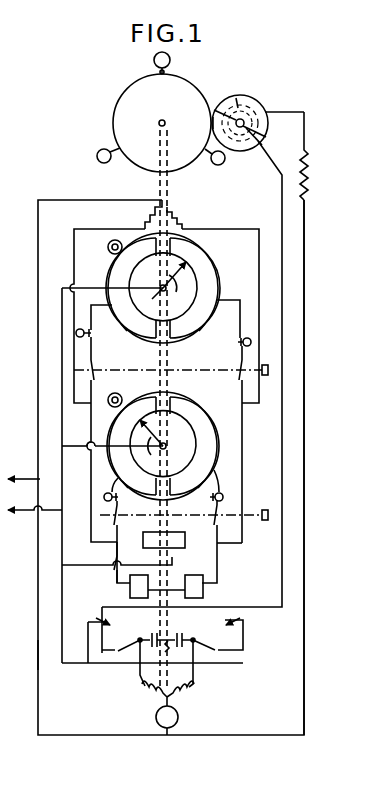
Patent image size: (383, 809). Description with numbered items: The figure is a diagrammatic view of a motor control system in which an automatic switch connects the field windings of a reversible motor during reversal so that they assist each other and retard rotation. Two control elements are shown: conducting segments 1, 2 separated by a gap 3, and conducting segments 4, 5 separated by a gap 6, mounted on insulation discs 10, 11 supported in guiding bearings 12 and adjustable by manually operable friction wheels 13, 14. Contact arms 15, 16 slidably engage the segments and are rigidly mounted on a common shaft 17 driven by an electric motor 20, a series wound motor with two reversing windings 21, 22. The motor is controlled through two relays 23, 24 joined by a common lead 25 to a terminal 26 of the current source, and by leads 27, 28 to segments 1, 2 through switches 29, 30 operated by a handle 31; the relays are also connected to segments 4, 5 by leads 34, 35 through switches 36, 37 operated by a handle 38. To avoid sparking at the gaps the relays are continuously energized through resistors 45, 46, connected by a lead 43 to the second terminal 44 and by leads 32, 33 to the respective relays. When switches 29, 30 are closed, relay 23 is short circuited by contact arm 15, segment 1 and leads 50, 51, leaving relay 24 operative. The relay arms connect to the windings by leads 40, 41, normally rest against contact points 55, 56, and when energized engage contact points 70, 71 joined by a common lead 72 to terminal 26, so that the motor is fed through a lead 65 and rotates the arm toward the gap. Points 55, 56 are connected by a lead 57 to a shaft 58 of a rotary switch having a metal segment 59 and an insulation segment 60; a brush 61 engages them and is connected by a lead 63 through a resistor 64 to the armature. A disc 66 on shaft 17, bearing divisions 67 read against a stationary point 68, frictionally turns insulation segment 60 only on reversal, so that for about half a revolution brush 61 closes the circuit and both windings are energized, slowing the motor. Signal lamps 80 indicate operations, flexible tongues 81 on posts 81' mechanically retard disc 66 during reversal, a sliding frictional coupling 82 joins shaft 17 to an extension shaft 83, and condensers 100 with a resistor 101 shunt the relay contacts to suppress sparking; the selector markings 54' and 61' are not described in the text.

The conducting segment 1 is at (124, 456).
The conducting segment 2 is at (214, 448).
The gap 3 is at (168, 402).
The conducting segment 4 is at (125, 332).
The conducting segment 5 is at (198, 318).
The gap 6 is at (170, 256).
The insulation disc 10 is at (214, 414).
The insulation disc 11 is at (204, 250).
The guiding bearing 12 is at (230, 267).
The friction wheel 13 is at (120, 396).
The friction wheel 14 is at (108, 250).
The contact arm 15 is at (146, 449).
The contact arm 16 is at (177, 284).
The common shaft 17 is at (163, 369).
The electric motor 20 is at (178, 718).
The reversing winding 21 is at (148, 694).
The reversing winding 22 is at (190, 692).
The relay 23 is at (130, 590).
The relay 24 is at (204, 590).
The common lead 25 is at (82, 562).
The terminal 26 is at (26, 520).
The lead 27 is at (118, 556).
The lead 28 is at (226, 560).
The switch 29 is at (118, 516).
The switch 30 is at (221, 512).
The handle 31 is at (269, 512).
The lead 32 is at (74, 252).
The lead 33 is at (240, 229).
The lead 34 is at (86, 432).
The lead 35 is at (243, 440).
The switch 36 is at (96, 376).
The switch 37 is at (234, 372).
The handle 38 is at (269, 370).
The lead 40 is at (140, 674).
The lead 41 is at (196, 678).
The lead 43 is at (38, 396).
The terminal 44 is at (28, 476).
The resistor 45 is at (150, 222).
The resistor 46 is at (172, 222).
The lead 50 is at (72, 475).
The lead 51 is at (91, 490).
The selector 54' is at (267, 79).
The contact point 55 is at (112, 660).
The contact point 56 is at (232, 652).
The lead 57 is at (283, 298).
The shaft 58 is at (237, 99).
The metal segment 59 is at (240, 129).
The insulation segment 60 is at (246, 104).
The brush 61 is at (285, 102).
The contact arm 61' is at (278, 130).
The lead 63 is at (305, 268).
The resistor 64 is at (312, 178).
The lead 65 is at (38, 654).
The disc 66 is at (190, 82).
The divisions 67 is at (136, 82).
The stationary point 68 is at (112, 123).
The contact point 70 is at (102, 626).
The contact point 71 is at (244, 622).
The common lead 72 is at (80, 664).
The signal lamp 80 is at (251, 342).
The tongue 81 is at (94, 166).
The post 81' is at (221, 169).
The sliding frictional coupling 82 is at (186, 532).
The extension shaft 83 is at (174, 557).
The condenser 100 is at (160, 640).
The resistor 101 is at (165, 652).